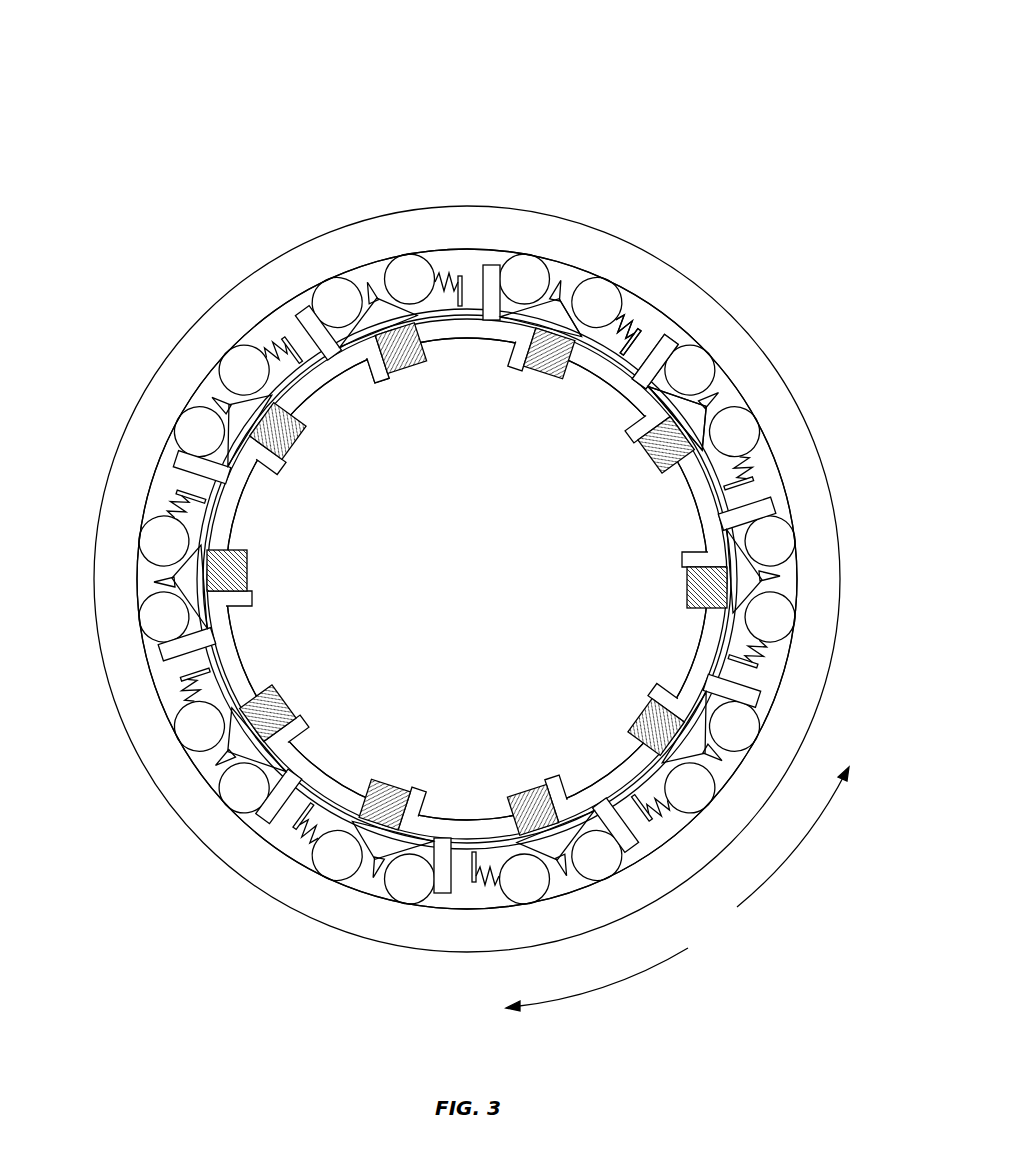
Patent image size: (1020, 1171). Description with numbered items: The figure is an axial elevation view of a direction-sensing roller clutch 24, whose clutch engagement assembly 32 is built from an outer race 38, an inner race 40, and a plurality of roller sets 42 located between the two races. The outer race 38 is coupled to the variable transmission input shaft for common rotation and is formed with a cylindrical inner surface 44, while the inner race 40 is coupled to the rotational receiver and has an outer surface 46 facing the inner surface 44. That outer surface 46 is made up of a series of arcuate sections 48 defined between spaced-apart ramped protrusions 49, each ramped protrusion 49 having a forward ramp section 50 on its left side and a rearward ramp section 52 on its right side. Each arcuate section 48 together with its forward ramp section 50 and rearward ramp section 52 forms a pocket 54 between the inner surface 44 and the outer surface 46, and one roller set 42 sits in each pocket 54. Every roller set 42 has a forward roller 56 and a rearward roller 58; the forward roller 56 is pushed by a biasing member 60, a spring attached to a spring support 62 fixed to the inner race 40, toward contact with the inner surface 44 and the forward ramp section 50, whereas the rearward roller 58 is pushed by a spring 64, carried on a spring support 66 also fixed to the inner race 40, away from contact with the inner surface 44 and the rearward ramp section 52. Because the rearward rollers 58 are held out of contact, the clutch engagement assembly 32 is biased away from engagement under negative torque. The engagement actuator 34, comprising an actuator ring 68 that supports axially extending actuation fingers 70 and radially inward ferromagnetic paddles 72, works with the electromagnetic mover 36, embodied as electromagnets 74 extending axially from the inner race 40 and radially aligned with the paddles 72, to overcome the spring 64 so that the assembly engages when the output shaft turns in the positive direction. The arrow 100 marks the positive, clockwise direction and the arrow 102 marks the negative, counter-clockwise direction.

The direction-sensing roller clutch 24 is at (122, 115).
The clutch engagement assembly 32 is at (495, 86).
The outer race 38 is at (622, 237).
The inner race 40 is at (757, 437).
The roller set 42 is at (615, 143).
The forward roller 56 is at (437, 264).
The biasing member 60 is at (435, 262).
The spring support 62 is at (461, 276).
The rearward roller 58 is at (507, 253).
The spring 64 is at (553, 285).
The spring support 66 is at (570, 305).
The ramped protrusion 49 is at (578, 288).
The cylindrical inner surface 44 is at (785, 491).
The pocket 54 is at (647, 307).
The outer surface 46 is at (730, 258).
The forward ramp section 50 is at (660, 302).
The arcuate section 48 is at (680, 352).
The rearward ramp section 52 is at (714, 405).
The engagement actuator 34 is at (200, 213).
The actuator ring 68 is at (287, 306).
The paddle 72 is at (317, 380).
The actuation finger 70 is at (367, 378).
The electromagnet 74 is at (256, 568).
The electromagnetic mover 36 is at (328, 532).
The arrow 100 is at (614, 983).
The arrow 102 is at (775, 877).